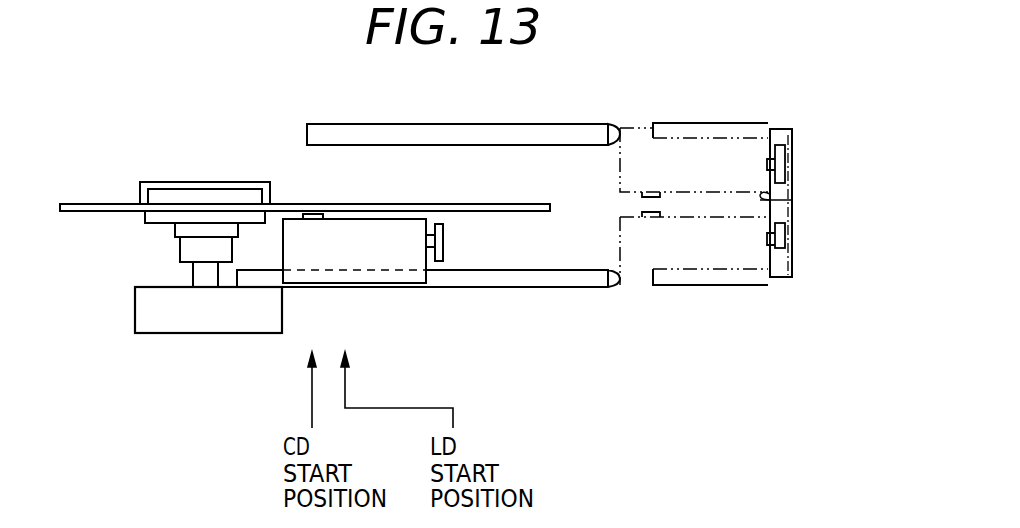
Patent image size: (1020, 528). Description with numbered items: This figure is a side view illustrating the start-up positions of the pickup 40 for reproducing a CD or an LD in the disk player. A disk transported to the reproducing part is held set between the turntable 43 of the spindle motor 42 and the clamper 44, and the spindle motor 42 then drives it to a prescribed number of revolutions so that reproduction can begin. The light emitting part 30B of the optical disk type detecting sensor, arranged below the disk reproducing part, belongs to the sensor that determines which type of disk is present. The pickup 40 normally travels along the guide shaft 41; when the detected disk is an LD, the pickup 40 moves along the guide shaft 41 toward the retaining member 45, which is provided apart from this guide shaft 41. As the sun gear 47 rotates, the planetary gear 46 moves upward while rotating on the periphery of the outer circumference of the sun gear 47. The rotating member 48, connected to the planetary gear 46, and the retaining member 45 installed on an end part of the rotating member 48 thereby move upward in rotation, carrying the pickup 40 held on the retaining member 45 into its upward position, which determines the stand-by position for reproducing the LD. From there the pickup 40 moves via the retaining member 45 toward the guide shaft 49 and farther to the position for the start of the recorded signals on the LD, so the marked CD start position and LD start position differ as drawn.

The light emitting part 30B is at (73, 203).
The pickup 40 is at (393, 250).
The guide shaft 41 is at (515, 282).
The spindle motor 42 is at (169, 334).
The turntable 43 is at (147, 224).
The clamper 44 is at (178, 181).
The retaining member 45 is at (687, 130).
The planetary gear 46 is at (778, 248).
The sun gear 47 is at (790, 138).
The rotating member 48 is at (793, 196).
The guide shaft 49 is at (517, 124).